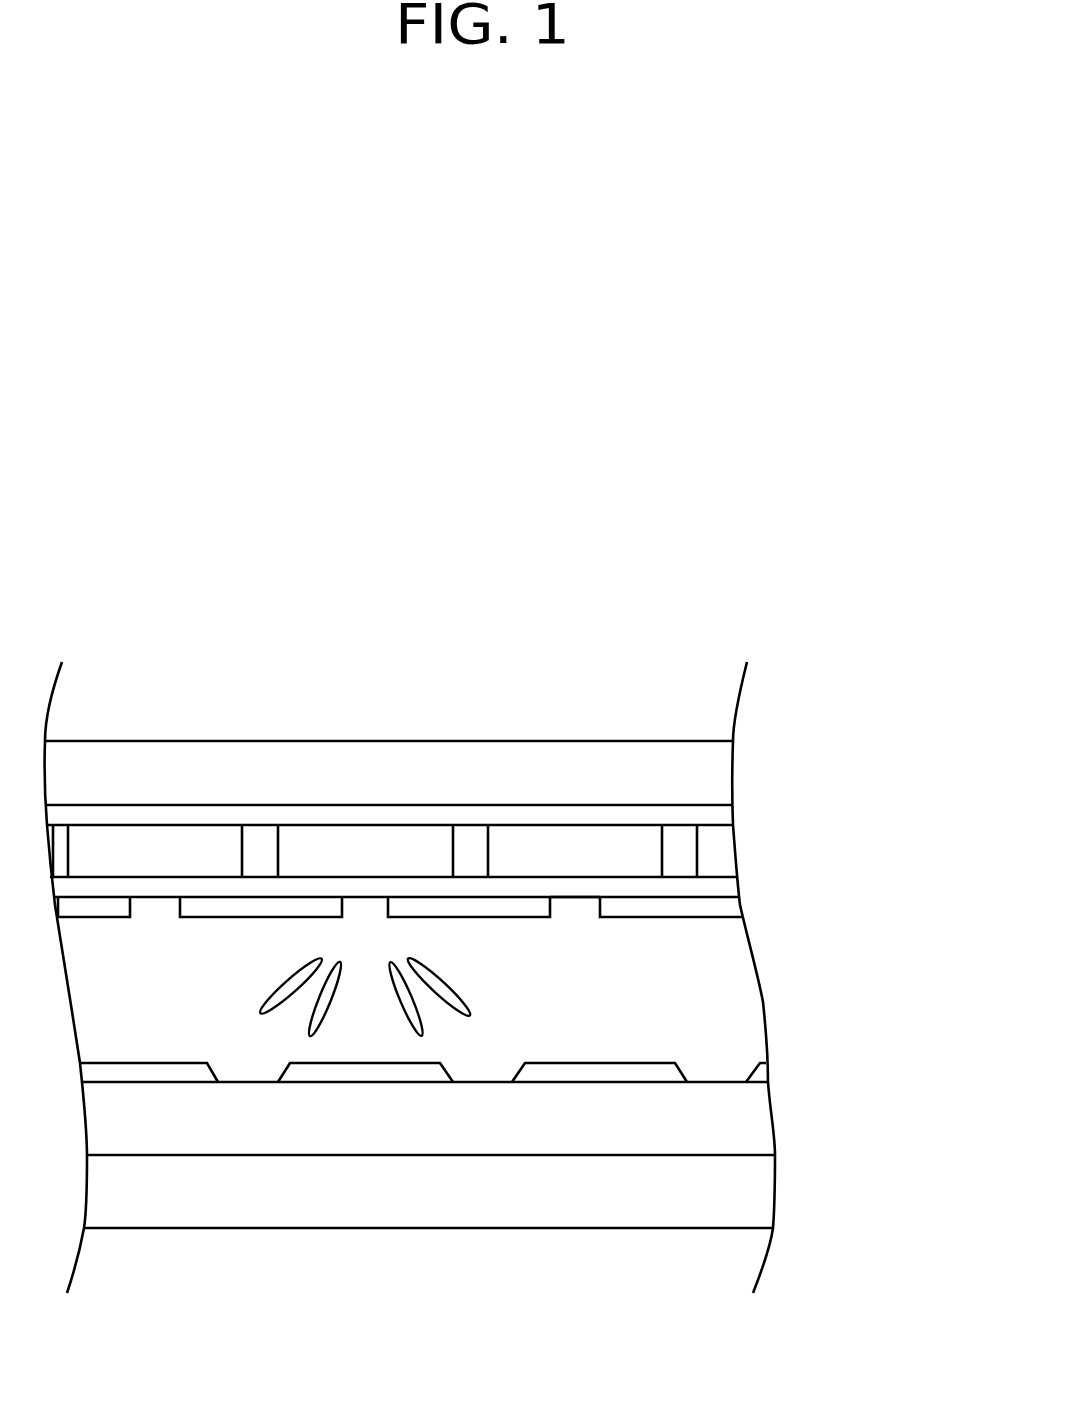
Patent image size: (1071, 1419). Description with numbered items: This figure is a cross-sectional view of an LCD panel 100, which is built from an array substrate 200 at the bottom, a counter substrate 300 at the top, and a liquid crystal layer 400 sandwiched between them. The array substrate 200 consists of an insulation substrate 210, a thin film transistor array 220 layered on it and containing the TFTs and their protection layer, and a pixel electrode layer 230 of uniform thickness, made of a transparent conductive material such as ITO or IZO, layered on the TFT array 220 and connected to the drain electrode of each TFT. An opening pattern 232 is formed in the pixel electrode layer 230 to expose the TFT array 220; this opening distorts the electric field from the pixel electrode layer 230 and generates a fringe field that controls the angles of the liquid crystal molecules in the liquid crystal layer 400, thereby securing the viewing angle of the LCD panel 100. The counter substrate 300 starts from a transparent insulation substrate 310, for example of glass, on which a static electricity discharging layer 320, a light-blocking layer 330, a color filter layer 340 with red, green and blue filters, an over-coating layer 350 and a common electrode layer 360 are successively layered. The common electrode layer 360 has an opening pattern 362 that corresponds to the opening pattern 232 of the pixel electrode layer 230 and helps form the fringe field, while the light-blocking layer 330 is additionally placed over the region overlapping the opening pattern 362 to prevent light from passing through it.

The LCD panel 100 is at (477, 483).
The array substrate 200 is at (785, 1210).
The insulation substrate 210 is at (545, 1200).
The thin film transistor array 220 is at (682, 1138).
The pixel electrode layer 230 is at (330, 1072).
The opening pattern 232 is at (490, 1070).
The counter substrate 300 is at (745, 850).
The insulation substrate 310 is at (415, 780).
The static electricity discharging layer 320 is at (545, 817).
The light-blocking layer 330 is at (683, 860).
The color filter layer 340 is at (315, 855).
The over-coating layer 350 is at (222, 890).
The common electrode layer 360 is at (728, 908).
The opening pattern 362 is at (584, 911).
The liquid crystal layer 400 is at (763, 1002).